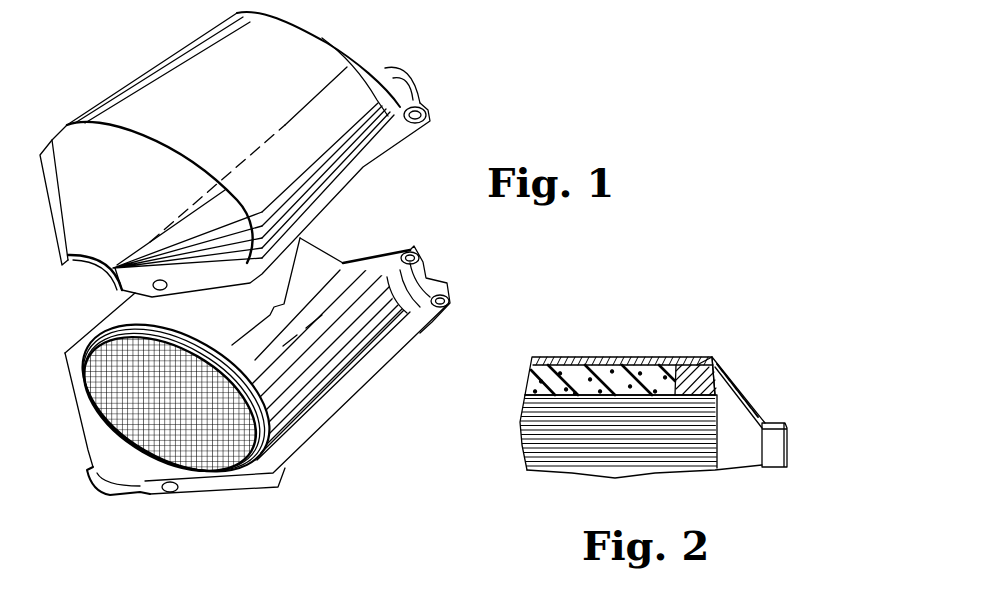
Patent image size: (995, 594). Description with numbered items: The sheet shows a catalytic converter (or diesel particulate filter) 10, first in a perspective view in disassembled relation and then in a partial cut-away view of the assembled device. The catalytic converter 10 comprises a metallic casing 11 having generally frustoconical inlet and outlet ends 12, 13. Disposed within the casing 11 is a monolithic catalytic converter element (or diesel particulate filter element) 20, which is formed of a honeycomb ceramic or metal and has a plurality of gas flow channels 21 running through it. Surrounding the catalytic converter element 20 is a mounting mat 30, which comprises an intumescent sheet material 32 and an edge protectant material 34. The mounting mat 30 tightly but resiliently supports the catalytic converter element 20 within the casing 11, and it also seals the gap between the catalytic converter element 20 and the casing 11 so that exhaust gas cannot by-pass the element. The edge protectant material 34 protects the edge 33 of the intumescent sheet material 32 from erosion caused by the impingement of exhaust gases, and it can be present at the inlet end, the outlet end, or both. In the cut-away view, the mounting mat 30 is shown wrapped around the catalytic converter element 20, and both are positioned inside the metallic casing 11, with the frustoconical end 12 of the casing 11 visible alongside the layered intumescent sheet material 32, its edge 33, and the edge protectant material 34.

In FIG. 1, the catalytic converter 10 is at (470, 125).
In FIG. 1, the metallic casing 11 is at (155, 90).
In FIG. 2, the metallic casing 11 is at (732, 380).
In FIG. 1, the inlet end 12 is at (108, 492).
In FIG. 2, the inlet end 12 is at (776, 450).
In FIG. 1, the outlet end 13 is at (428, 283).
In FIG. 1, the catalytic converter element 20 is at (219, 384).
In FIG. 2, the catalytic converter element 20 is at (680, 422).
In FIG. 1, the gas flow channels 21 is at (98, 398).
In FIG. 2, the gas flow channels 21 is at (632, 458).
In FIG. 1, the mounting mat 30 is at (346, 262).
In FIG. 1, the intumescent sheet material 32 is at (330, 343).
In FIG. 2, the intumescent sheet material 32 is at (600, 377).
In FIG. 1, the edge 33 is at (105, 338).
In FIG. 2, the edge 33 is at (685, 365).
In FIG. 1, the edge protectant material 34 is at (278, 443).
In FIG. 2, the edge protectant material 34 is at (701, 370).